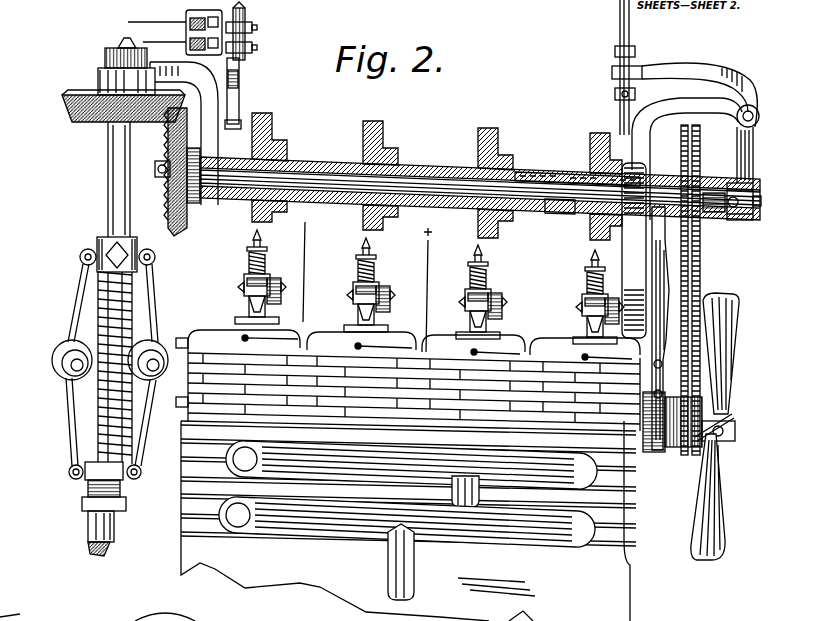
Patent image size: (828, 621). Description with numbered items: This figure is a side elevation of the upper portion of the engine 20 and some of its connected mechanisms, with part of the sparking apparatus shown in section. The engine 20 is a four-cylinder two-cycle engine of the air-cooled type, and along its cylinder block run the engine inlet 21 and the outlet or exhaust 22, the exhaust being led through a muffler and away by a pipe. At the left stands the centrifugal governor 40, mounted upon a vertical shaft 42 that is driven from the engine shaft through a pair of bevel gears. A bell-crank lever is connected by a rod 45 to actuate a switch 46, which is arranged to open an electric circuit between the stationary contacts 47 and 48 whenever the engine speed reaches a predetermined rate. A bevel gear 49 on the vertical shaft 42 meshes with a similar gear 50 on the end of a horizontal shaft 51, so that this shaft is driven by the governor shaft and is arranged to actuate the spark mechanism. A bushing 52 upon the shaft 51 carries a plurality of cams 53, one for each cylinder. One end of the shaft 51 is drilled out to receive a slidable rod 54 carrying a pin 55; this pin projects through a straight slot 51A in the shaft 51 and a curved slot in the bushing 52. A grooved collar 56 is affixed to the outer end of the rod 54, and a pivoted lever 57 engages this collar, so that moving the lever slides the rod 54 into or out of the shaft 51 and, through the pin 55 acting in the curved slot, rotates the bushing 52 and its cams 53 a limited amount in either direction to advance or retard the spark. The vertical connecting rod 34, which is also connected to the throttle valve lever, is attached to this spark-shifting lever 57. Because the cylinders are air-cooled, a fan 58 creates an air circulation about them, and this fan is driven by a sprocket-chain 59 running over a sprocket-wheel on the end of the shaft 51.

The engine 20 is at (612, 456).
The engine inlet 21 is at (436, 547).
The outlet or exhaust 22 is at (433, 464).
The vertical connecting rod 34 is at (622, 26).
The centrifugal governor 40 is at (78, 307).
The vertical shaft 42 is at (108, 193).
The rod 45 is at (241, 108).
The switch 46 is at (250, 42).
The stationary contact 47 is at (186, 13).
The stationary contact 48 is at (186, 36).
The bevel gear 49 is at (83, 118).
The bevel gear 50 is at (170, 226).
The horizontal shaft 51 is at (165, 162).
The straight slot 51A is at (505, 210).
The bushing 52 is at (419, 162).
The cams 53 is at (272, 129).
The slidable rod 54 is at (510, 180).
The pin 55 is at (553, 209).
The grooved collar 56 is at (748, 220).
The pivoted lever 57 is at (754, 143).
The fan 58 is at (726, 364).
The sprocket-chain 59 is at (705, 280).